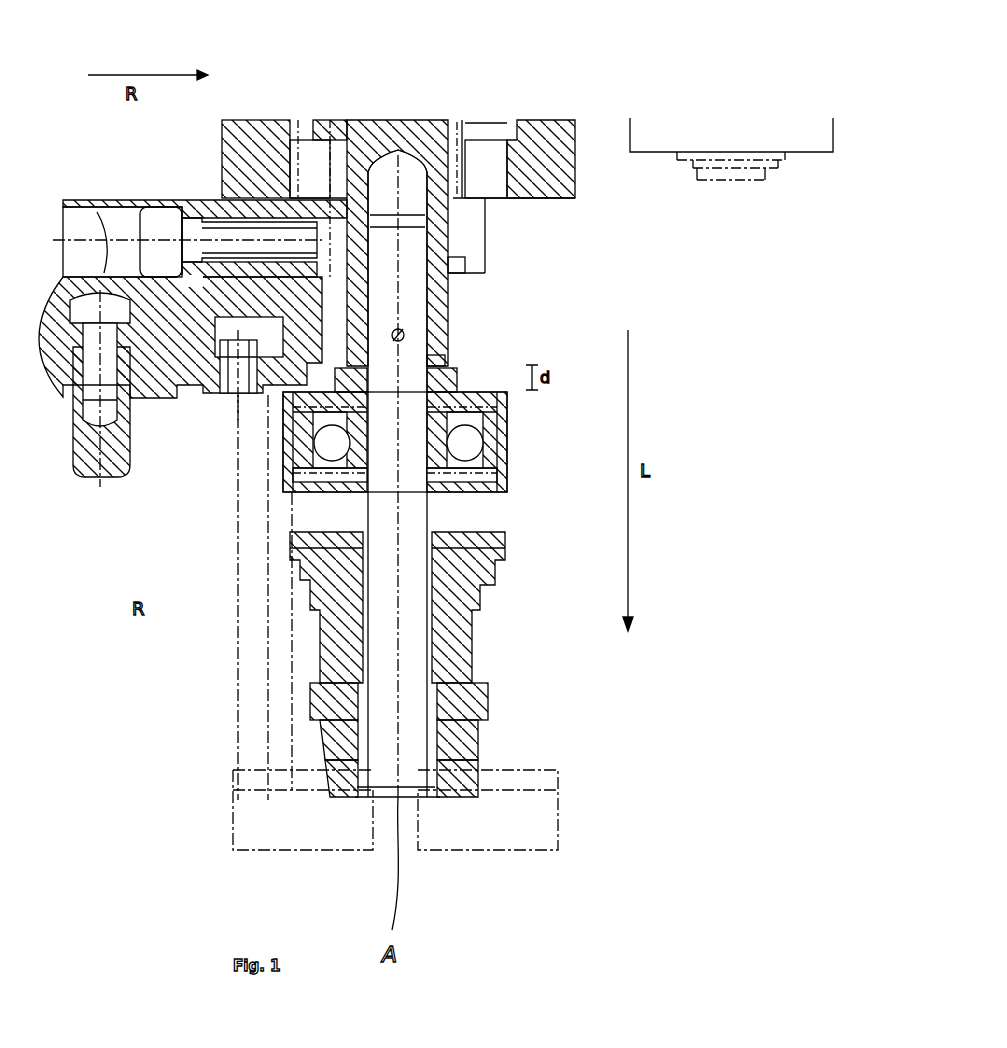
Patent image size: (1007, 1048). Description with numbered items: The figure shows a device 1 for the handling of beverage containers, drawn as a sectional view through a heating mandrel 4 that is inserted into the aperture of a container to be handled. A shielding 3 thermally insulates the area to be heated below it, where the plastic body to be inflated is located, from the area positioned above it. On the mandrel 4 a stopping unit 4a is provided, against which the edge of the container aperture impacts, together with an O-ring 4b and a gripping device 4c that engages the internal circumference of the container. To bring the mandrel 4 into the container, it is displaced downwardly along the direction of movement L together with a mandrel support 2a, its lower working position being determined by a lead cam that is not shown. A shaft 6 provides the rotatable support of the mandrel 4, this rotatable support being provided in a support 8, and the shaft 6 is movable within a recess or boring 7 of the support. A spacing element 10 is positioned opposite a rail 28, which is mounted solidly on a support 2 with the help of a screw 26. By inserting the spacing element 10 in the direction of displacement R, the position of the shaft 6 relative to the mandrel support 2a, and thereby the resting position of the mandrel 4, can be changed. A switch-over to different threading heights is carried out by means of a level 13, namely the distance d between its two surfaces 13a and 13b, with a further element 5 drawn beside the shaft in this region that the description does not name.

The device 1 is at (627, 650).
The support 2 is at (537, 120).
The mandrel support 2a is at (402, 120).
The shielding 3 is at (485, 802).
The mandrel 4 is at (376, 743).
The stopping unit 4a is at (313, 720).
The O-ring 4b is at (477, 741).
The gripping device 4c is at (320, 772).
The spacer ring 5 is at (445, 370).
The shaft 6 is at (405, 282).
The recess or boring 7 is at (465, 178).
The support 8 is at (379, 454).
The spacing element 10 is at (203, 329).
The level 13 is at (363, 407).
The surface 13a is at (435, 365).
The surface 13b is at (306, 382).
The screw 26 is at (143, 200).
The rail 28 is at (95, 200).